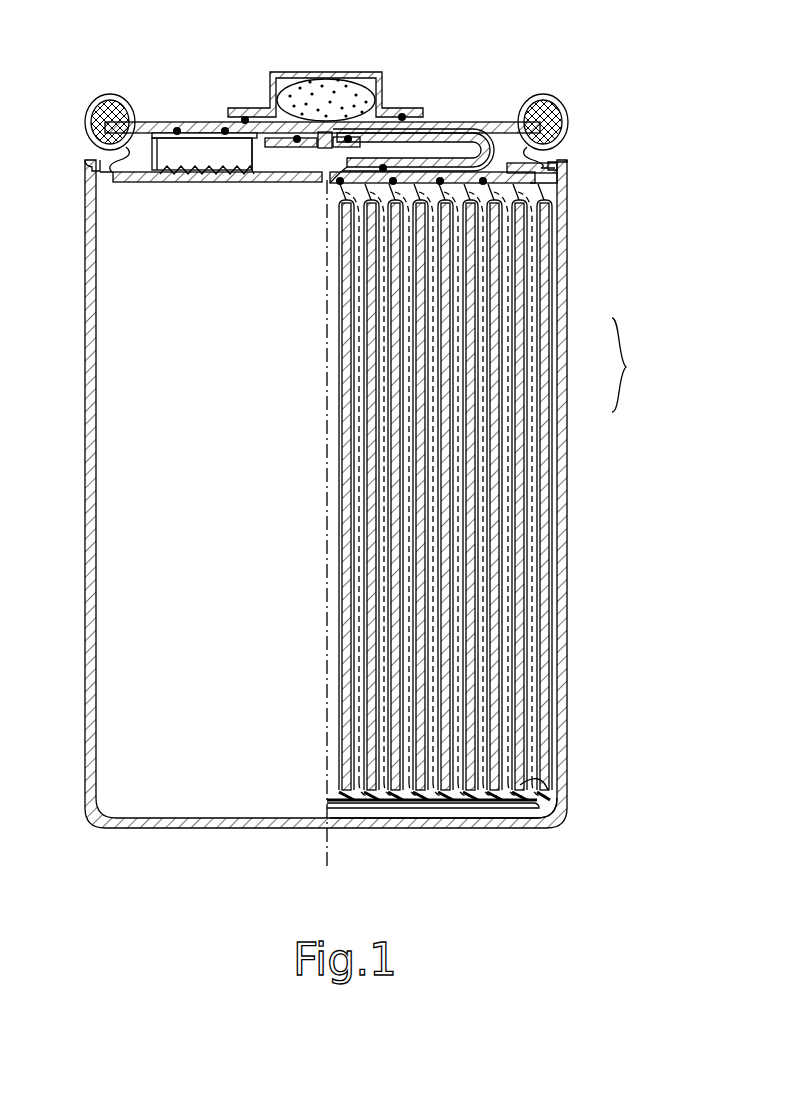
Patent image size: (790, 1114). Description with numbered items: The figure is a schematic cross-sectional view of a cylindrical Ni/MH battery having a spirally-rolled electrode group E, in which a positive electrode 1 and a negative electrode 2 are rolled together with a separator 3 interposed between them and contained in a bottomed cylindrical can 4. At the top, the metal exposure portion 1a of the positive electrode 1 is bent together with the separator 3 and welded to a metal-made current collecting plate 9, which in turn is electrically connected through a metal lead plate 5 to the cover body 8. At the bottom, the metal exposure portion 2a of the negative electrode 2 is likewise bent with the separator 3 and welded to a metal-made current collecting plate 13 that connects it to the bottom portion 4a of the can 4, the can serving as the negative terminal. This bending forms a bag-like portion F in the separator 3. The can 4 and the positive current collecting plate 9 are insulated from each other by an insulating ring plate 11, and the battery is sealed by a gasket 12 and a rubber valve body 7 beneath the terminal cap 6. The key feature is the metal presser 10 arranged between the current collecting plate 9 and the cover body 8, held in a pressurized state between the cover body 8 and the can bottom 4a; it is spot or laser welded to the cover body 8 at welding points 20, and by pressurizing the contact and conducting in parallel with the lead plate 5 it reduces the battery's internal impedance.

The positive electrode 1 is at (517, 353).
The metal exposure portion of the positive electrode 1a is at (523, 188).
The negative electrode 2 is at (550, 367).
The metal exposure portion of the negative electrode 2a is at (563, 815).
The separator 3 is at (532, 410).
The bottomed cylindrical can 4 is at (563, 452).
The bottom portion of the bottomed cylindrical can 4a is at (493, 818).
The metal lead plate 5 is at (440, 140).
The terminal cap 6 is at (385, 88).
The rubber valve body 7 is at (322, 84).
The cover body 8 is at (490, 123).
The metal-made current collecting plate 9 is at (253, 174).
The metal presser 10 is at (203, 150).
The insulating ring plate 11 is at (113, 176).
The gasket 12 is at (545, 118).
The metal-made current collecting plate 13 is at (452, 806).
The welding point 20 is at (243, 118).
The electrode group E is at (489, 492).
The bag-like portion F is at (527, 777).